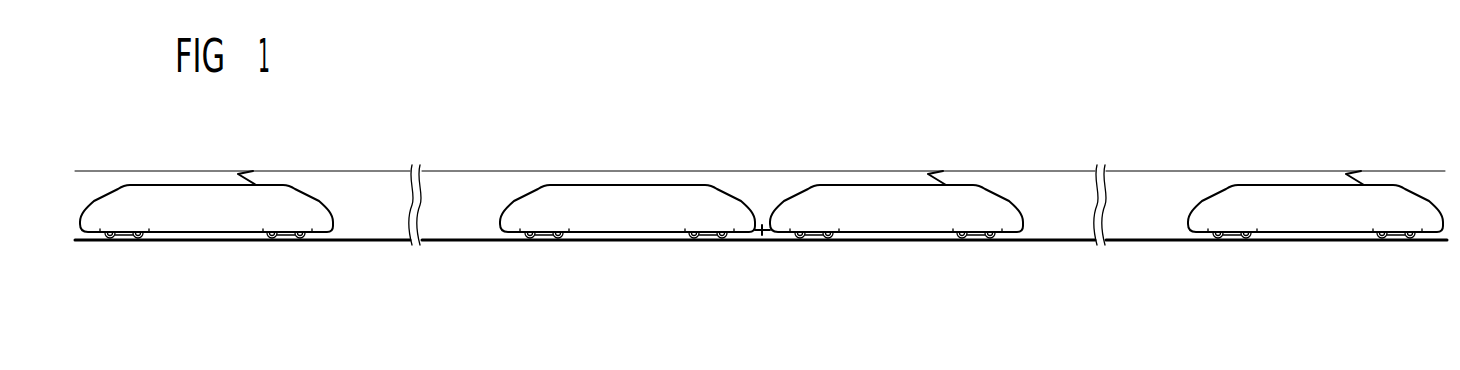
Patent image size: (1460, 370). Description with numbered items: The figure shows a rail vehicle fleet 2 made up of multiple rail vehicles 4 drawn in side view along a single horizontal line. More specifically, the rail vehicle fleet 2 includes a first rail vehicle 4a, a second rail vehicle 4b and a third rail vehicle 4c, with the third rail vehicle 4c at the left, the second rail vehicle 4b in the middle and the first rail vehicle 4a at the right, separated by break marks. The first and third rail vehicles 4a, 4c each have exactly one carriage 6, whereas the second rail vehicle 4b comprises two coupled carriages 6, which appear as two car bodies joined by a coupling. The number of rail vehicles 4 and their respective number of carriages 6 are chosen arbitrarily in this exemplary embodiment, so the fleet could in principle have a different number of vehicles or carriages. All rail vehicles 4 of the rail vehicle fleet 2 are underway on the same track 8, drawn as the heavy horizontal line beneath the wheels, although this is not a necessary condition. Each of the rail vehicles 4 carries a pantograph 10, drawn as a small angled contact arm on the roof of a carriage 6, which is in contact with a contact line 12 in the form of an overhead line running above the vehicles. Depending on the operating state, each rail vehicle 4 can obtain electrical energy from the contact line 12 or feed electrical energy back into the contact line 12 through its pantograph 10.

The rail vehicle fleet 2 is at (760, 173).
The rail vehicle 4 is at (758, 178).
The first rail vehicle 4a is at (1205, 190).
The second rail vehicle 4b is at (792, 190).
The third rail vehicle 4c is at (158, 178).
The carriage 6 is at (323, 207).
The track 8 is at (1062, 241).
The pantograph 10 is at (238, 174).
The contact line 12 is at (494, 170).